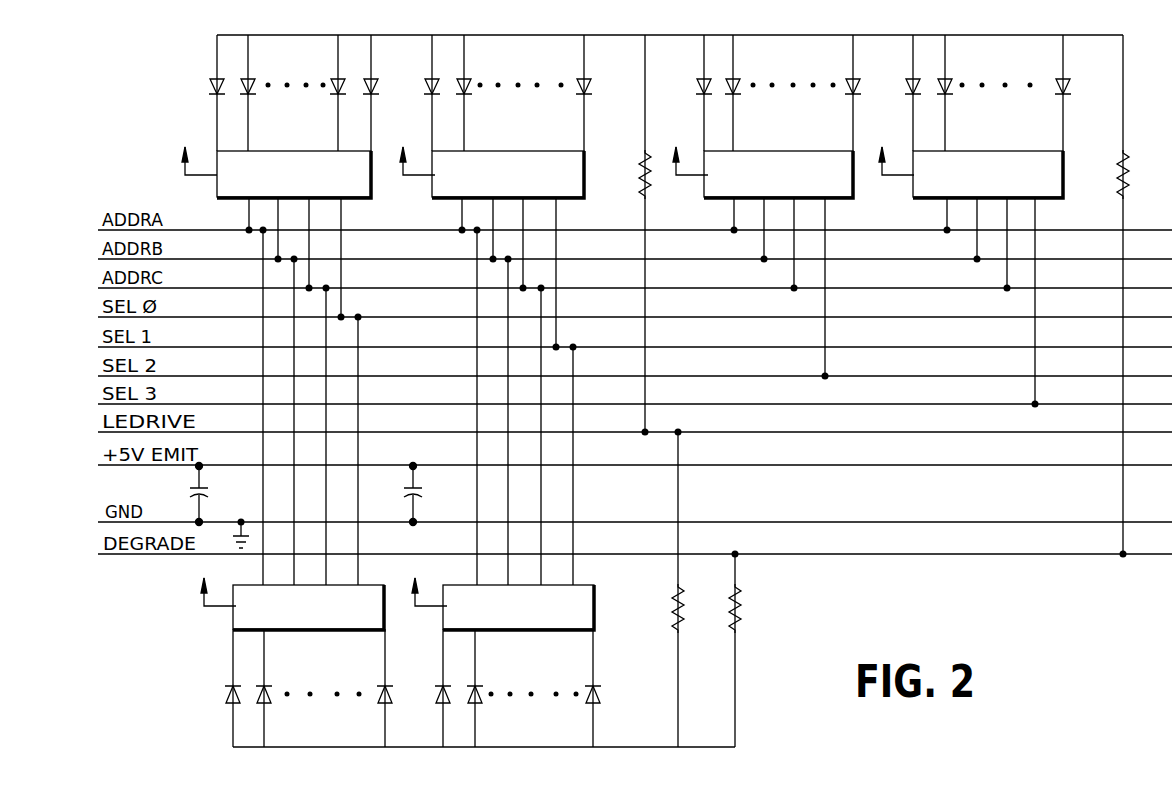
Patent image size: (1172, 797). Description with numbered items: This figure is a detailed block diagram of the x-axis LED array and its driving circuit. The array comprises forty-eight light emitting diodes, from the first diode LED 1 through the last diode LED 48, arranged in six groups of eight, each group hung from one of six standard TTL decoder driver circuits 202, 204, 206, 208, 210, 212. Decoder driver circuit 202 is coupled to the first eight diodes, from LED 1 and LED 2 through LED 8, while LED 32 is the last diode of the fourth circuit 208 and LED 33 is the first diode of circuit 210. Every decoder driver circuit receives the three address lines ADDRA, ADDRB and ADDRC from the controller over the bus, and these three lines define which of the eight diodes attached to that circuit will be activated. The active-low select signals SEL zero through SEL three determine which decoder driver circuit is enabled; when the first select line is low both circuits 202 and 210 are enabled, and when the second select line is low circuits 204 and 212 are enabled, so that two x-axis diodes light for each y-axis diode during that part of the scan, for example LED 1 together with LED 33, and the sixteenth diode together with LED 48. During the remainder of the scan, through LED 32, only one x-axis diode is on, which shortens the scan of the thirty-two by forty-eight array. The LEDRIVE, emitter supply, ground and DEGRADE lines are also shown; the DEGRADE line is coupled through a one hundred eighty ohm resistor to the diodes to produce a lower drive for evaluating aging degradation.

The light emitting diode LED1 1 is at (213, 85).
The light emitting diode LED2 2 is at (252, 80).
The light emitting diode LED8 8 is at (402, 60).
The light emitting diode LED32 32 is at (1050, 80).
The light emitting diode LED33 33 is at (228, 686).
The light emitting diode LED48 48 is at (586, 702).
The decoder driver circuit 202 is at (320, 151).
The decoder driver circuit 204 is at (553, 151).
The decoder driver circuit 206 is at (817, 151).
The decoder driver circuit 208 is at (1027, 151).
The decoder driver circuit 210 is at (343, 630).
The decoder driver circuit 212 is at (505, 630).